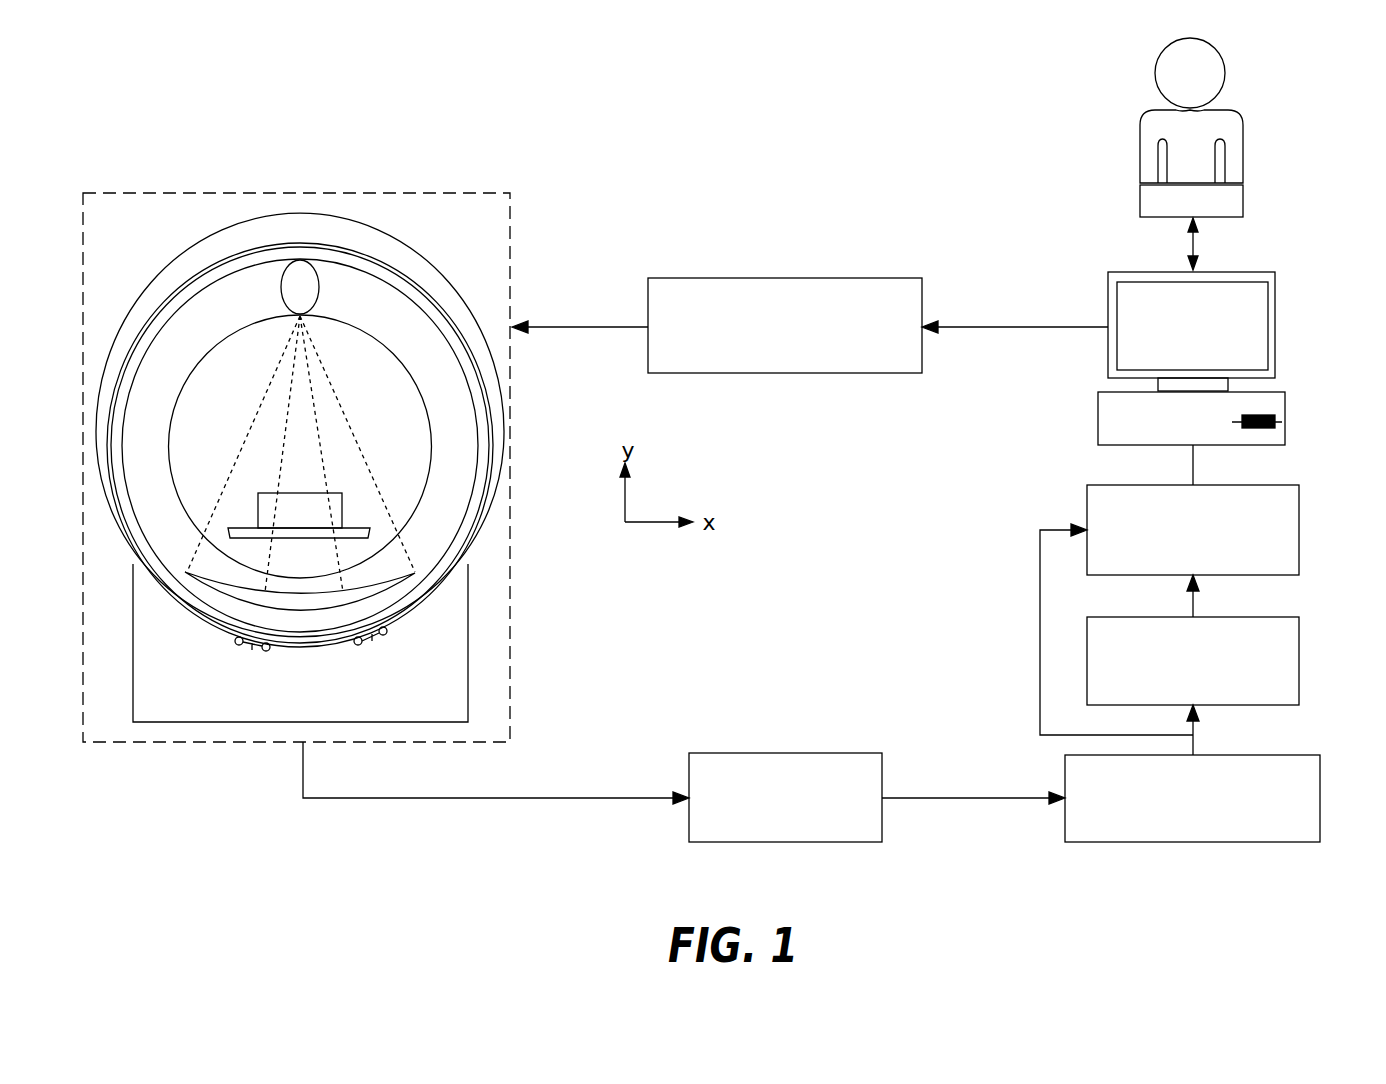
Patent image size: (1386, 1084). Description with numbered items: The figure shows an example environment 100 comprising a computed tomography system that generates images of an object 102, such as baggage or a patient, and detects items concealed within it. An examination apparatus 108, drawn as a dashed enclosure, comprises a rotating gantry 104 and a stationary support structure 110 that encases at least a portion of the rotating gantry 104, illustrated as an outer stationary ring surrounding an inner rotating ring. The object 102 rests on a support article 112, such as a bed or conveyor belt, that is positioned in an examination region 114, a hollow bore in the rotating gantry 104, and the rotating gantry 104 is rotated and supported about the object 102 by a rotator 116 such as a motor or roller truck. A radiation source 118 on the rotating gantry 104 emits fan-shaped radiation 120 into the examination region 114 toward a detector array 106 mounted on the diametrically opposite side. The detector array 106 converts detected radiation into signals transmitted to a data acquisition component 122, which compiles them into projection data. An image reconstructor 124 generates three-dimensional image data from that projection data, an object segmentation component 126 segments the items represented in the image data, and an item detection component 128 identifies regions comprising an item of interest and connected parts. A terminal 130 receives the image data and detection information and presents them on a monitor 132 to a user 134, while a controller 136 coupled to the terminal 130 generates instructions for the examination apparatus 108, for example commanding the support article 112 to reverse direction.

The example environment 100 is at (175, 106).
The object 102 is at (300, 493).
The rotating gantry 104 is at (218, 264).
The detector array 106 is at (222, 598).
The examination apparatus 108 is at (510, 193).
The support structure 110 is at (408, 256).
The support article 112 is at (235, 527).
The examination region 114 is at (284, 442).
The rotator 116 is at (388, 631).
The radiation source 118 is at (320, 290).
The radiation 120 is at (265, 407).
The data acquisition component 122 is at (785, 842).
The image reconstructor 124 is at (1320, 755).
The object segmentation component 126 is at (1299, 617).
The item detection component 128 is at (1299, 485).
The terminal 130 is at (1285, 390).
The monitor 132 is at (1275, 272).
The user 134 is at (1243, 122).
The controller 136 is at (787, 278).